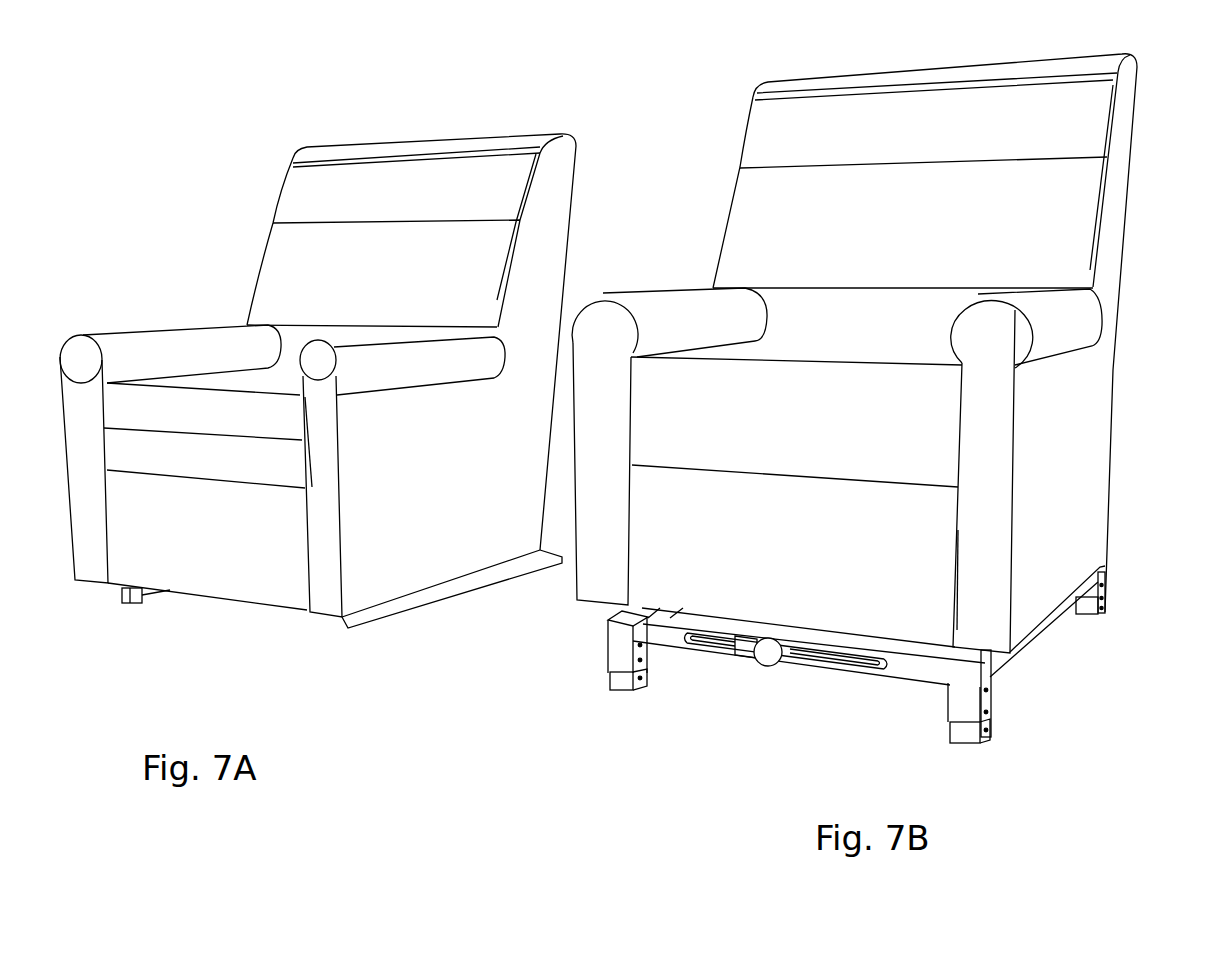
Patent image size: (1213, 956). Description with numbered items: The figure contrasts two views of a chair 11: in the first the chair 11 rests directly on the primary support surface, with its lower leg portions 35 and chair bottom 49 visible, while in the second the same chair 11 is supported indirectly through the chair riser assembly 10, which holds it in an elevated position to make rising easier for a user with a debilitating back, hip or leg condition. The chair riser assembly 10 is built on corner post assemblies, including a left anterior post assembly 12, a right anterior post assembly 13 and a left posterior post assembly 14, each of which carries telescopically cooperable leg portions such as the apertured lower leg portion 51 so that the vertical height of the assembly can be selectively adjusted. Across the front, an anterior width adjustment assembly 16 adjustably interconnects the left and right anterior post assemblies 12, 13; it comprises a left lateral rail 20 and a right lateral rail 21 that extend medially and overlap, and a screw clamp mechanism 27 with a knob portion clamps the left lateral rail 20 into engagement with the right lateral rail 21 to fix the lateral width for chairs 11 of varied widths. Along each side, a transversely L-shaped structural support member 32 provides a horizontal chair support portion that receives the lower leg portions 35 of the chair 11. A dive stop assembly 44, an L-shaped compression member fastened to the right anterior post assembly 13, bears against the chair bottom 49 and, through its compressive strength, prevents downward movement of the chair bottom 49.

In FIG. 7B, the chair riser assembly 10 is at (861, 686).
In FIG. 7A, the chair 11 is at (563, 134).
In FIG. 7B, the chair 11 is at (1130, 110).
In FIG. 7B, the left anterior post assembly 12 is at (948, 747).
In FIG. 7B, the right anterior post assembly 13 is at (615, 708).
In FIG. 7B, the left posterior post assembly 14 is at (1118, 592).
In FIG. 7B, the anterior width adjustment assembly 16 is at (845, 697).
In FIG. 7B, the left lateral rail 20 is at (913, 670).
In FIG. 7B, the right lateral rail 21 is at (667, 638).
In FIG. 7B, the screw clamp mechanism 27 is at (762, 677).
In FIG. 7B, the L-shaped structural support member 32 is at (1015, 653).
In FIG. 7A, the lower leg portion 35 is at (142, 595).
In FIG. 7B, the dive stop assembly 44 is at (993, 700).
In FIG. 7A, the chair bottom 49 is at (365, 592).
In FIG. 7B, the chair bottom 49 is at (1023, 610).
In FIG. 7B, the apertured lower leg portion 51 is at (605, 680).